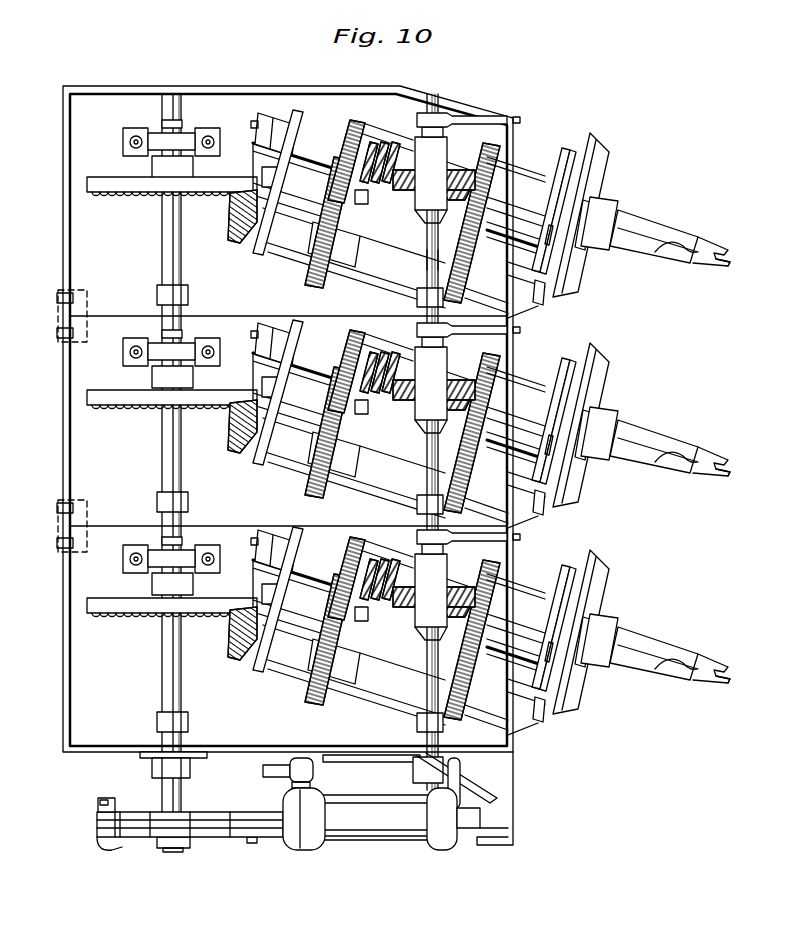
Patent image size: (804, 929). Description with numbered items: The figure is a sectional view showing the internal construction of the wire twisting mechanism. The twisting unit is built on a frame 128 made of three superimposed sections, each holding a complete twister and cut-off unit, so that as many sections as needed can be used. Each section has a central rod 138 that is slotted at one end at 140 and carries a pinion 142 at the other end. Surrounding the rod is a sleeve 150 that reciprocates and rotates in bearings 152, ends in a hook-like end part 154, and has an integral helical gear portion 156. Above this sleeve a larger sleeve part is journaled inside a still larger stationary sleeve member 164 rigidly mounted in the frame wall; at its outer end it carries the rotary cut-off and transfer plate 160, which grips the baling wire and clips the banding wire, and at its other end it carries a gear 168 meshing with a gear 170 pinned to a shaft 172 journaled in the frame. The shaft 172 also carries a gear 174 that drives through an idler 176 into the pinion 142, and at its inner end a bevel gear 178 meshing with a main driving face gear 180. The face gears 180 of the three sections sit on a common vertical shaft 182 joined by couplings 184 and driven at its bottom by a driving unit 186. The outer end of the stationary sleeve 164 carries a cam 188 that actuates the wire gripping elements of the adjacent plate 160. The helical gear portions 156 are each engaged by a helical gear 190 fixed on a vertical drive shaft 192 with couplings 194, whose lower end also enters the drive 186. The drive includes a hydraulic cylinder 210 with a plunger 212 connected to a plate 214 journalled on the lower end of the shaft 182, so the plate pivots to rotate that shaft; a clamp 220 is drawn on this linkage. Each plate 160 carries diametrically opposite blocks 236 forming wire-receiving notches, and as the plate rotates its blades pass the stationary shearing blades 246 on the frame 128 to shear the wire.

The frame 128 is at (63, 603).
The central rod 138 is at (716, 240).
The slot 140 is at (724, 263).
The pinion 142 is at (365, 125).
The sleeve 150 is at (660, 226).
The bearings 152 is at (618, 200).
The hook-like end part 154 is at (690, 263).
The helical gear portion 156 is at (400, 160).
The rotary cut-off and transfer plate 160 is at (600, 145).
The sleeve member 164 is at (540, 162).
The gear 168 is at (512, 133).
The gear 170 is at (425, 300).
The shaft 172 is at (386, 252).
The gear 174 is at (310, 272).
The idler 176 is at (355, 205).
The bevel gear 178 is at (228, 232).
The main driving face gear 180 is at (140, 209).
The vertical shaft 182 is at (162, 447).
The couplings 184 is at (190, 295).
The driving unit 186 is at (203, 857).
The cam 188 is at (568, 140).
The helical gear 190 is at (420, 214).
The drive shaft 192 is at (432, 255).
The couplings 194 is at (417, 296).
The hydraulic cylinder 210 is at (365, 808).
The plunger 212 is at (217, 818).
The plate 214 is at (100, 848).
The clamp 220 is at (138, 830).
The blocks 236 is at (592, 255).
The stationary shearing blades 246 is at (546, 304).